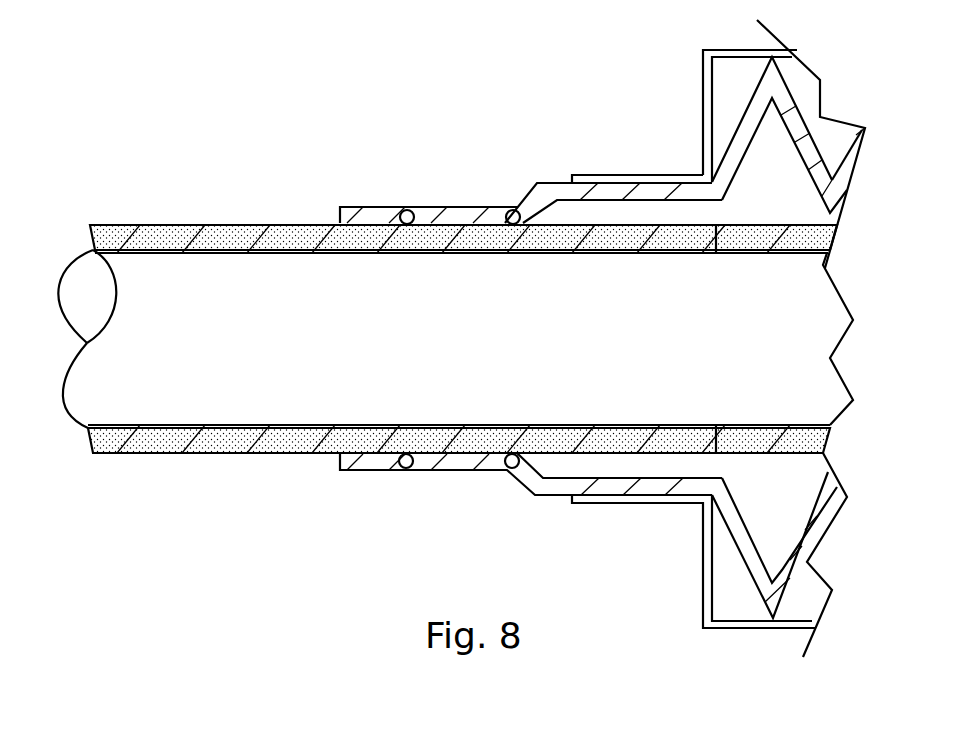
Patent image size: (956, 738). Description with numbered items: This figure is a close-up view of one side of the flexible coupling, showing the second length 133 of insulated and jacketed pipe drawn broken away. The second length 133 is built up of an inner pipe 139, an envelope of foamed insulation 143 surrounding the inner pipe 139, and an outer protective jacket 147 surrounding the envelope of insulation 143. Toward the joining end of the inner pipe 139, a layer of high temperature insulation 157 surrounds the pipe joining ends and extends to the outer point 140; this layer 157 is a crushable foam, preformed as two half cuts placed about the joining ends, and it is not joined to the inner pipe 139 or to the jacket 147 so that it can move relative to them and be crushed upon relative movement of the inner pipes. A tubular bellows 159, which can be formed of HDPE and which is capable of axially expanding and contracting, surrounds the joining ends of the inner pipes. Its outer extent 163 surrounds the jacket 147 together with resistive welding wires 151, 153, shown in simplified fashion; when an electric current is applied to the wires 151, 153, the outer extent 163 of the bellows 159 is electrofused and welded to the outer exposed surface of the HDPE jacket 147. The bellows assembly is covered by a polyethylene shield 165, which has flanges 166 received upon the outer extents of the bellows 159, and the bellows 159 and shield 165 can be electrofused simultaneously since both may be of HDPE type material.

The second length 133 is at (121, 136).
The inner pipe 139 is at (267, 270).
The outer point 140 is at (672, 480).
The envelope of foamed insulation 143 is at (206, 447).
The outer protective jacket 147 is at (268, 447).
The welding wire 151 is at (437, 207).
The welding wire 153 is at (505, 472).
The layer of high temperature insulation 157 is at (718, 518).
The tubular bellows 159 is at (790, 110).
The outer extent 163 is at (495, 213).
The shield 165 is at (722, 65).
The flanges 166 is at (650, 180).